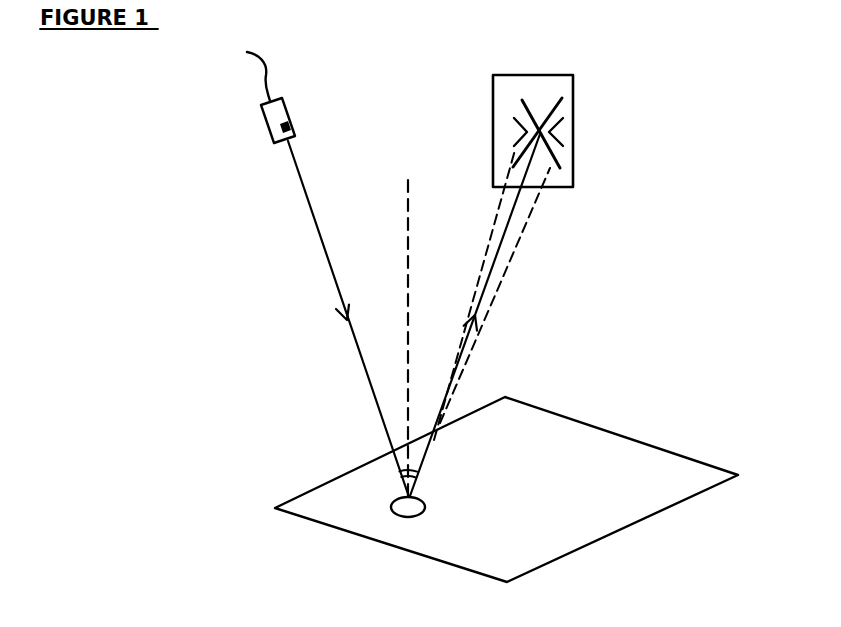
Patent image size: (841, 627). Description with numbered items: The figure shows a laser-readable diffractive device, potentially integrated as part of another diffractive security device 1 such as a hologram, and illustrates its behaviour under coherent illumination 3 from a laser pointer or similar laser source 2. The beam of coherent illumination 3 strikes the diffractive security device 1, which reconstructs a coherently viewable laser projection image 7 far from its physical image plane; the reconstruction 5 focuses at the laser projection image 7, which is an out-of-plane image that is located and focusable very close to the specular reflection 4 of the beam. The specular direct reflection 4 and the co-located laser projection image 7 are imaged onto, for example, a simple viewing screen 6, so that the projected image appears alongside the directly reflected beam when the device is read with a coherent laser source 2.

The diffractive security device 1 is at (508, 489).
The laser source 2 is at (283, 97).
The coherent illumination 3 is at (348, 319).
The specular reflection 4 is at (475, 315).
The reconstruction 5 is at (492, 295).
The viewing screen 6 is at (548, 120).
The laser projection image 7 is at (563, 130).